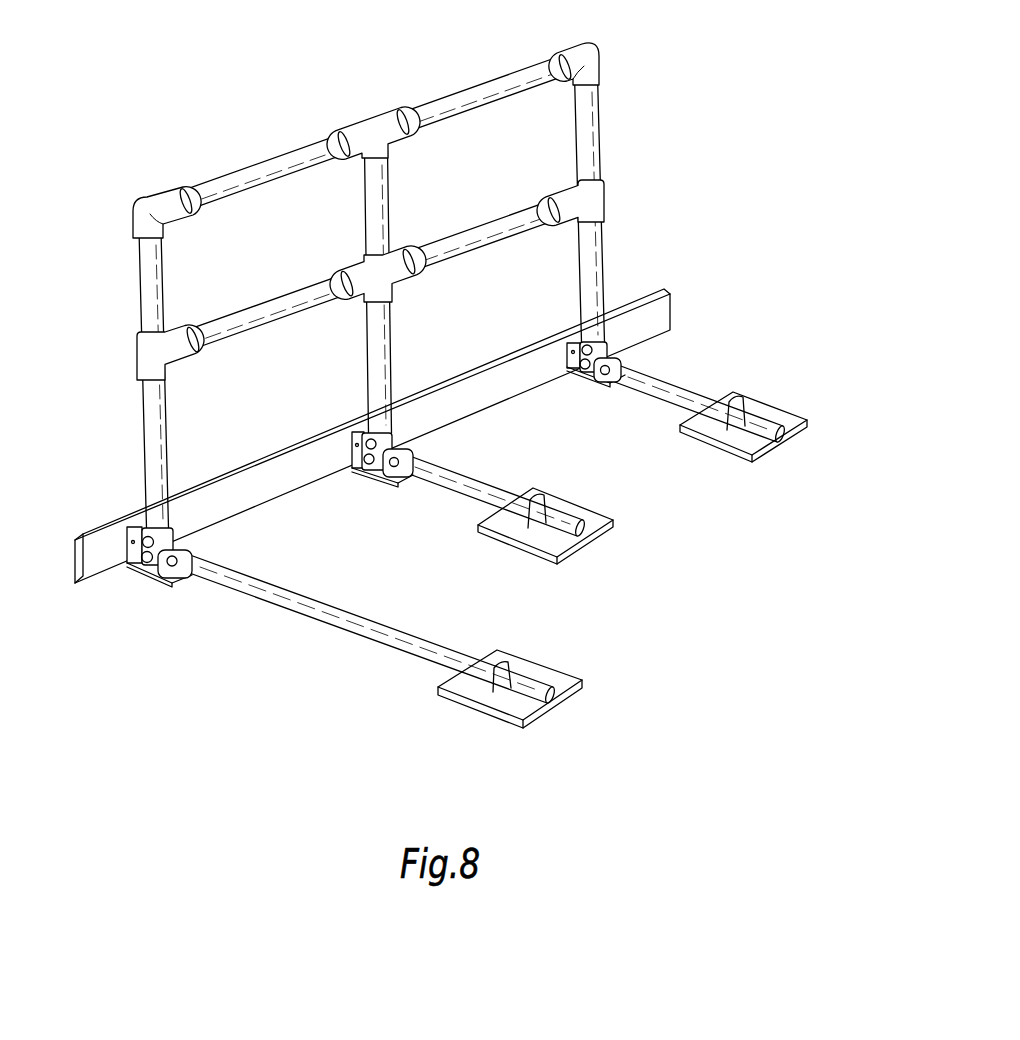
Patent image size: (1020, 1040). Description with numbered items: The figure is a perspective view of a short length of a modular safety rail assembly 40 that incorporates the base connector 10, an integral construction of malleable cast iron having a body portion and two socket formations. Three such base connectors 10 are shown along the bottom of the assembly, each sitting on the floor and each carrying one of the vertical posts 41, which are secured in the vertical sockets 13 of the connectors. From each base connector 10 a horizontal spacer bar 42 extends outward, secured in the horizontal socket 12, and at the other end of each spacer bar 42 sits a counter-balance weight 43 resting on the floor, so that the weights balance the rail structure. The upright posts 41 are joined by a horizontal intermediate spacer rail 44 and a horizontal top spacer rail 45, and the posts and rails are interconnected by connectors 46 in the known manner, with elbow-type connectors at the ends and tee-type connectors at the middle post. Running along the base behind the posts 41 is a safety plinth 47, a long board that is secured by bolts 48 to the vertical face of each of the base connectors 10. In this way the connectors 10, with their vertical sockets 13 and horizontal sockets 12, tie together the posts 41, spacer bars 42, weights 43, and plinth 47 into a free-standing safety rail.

The modular safety rail assembly 40 is at (642, 70).
The vertical posts 41 is at (142, 283).
The horizontal spacer bars 42 is at (408, 633).
The counter-balance weights 43 is at (467, 703).
The intermediate spacer rail 44 is at (222, 328).
The top spacer rail 45 is at (218, 190).
The connectors 46 is at (150, 197).
The safety plinth 47 is at (468, 407).
The bolts 48 is at (137, 537).
The connector 10 is at (140, 572).
The horizontal socket 12 is at (188, 578).
The vertical socket 13 is at (177, 527).